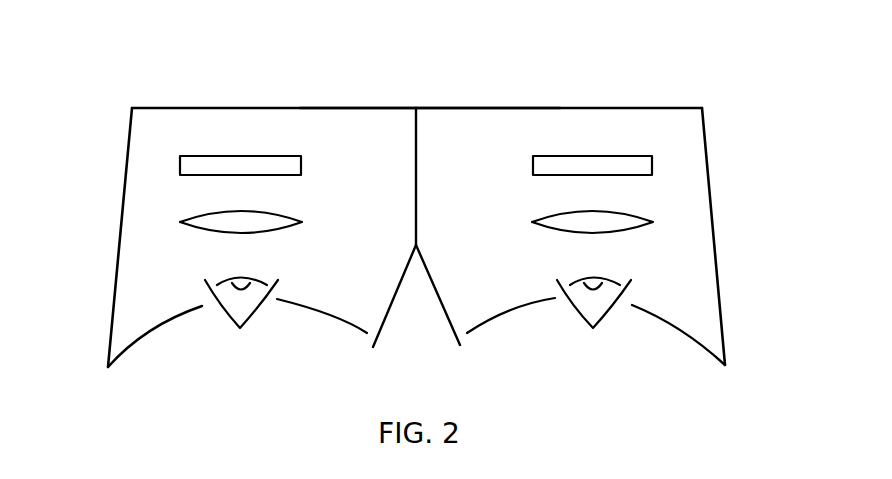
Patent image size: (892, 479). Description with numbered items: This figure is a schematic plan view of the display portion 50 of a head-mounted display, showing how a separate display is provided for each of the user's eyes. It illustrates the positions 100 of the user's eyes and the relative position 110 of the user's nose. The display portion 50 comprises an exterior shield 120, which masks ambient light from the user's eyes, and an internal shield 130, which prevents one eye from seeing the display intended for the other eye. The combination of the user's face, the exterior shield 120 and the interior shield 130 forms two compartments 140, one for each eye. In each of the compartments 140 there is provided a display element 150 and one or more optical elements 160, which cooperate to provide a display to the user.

The display portion 50 is at (690, 108).
The positions of the user's eyes 100 is at (243, 302).
The relative position of the user's nose 110 is at (440, 292).
The exterior shield 120 is at (492, 108).
The internal shield 130 is at (418, 177).
The compartments 140 is at (288, 128).
The display element 150 is at (200, 163).
The optical elements 160 is at (187, 222).